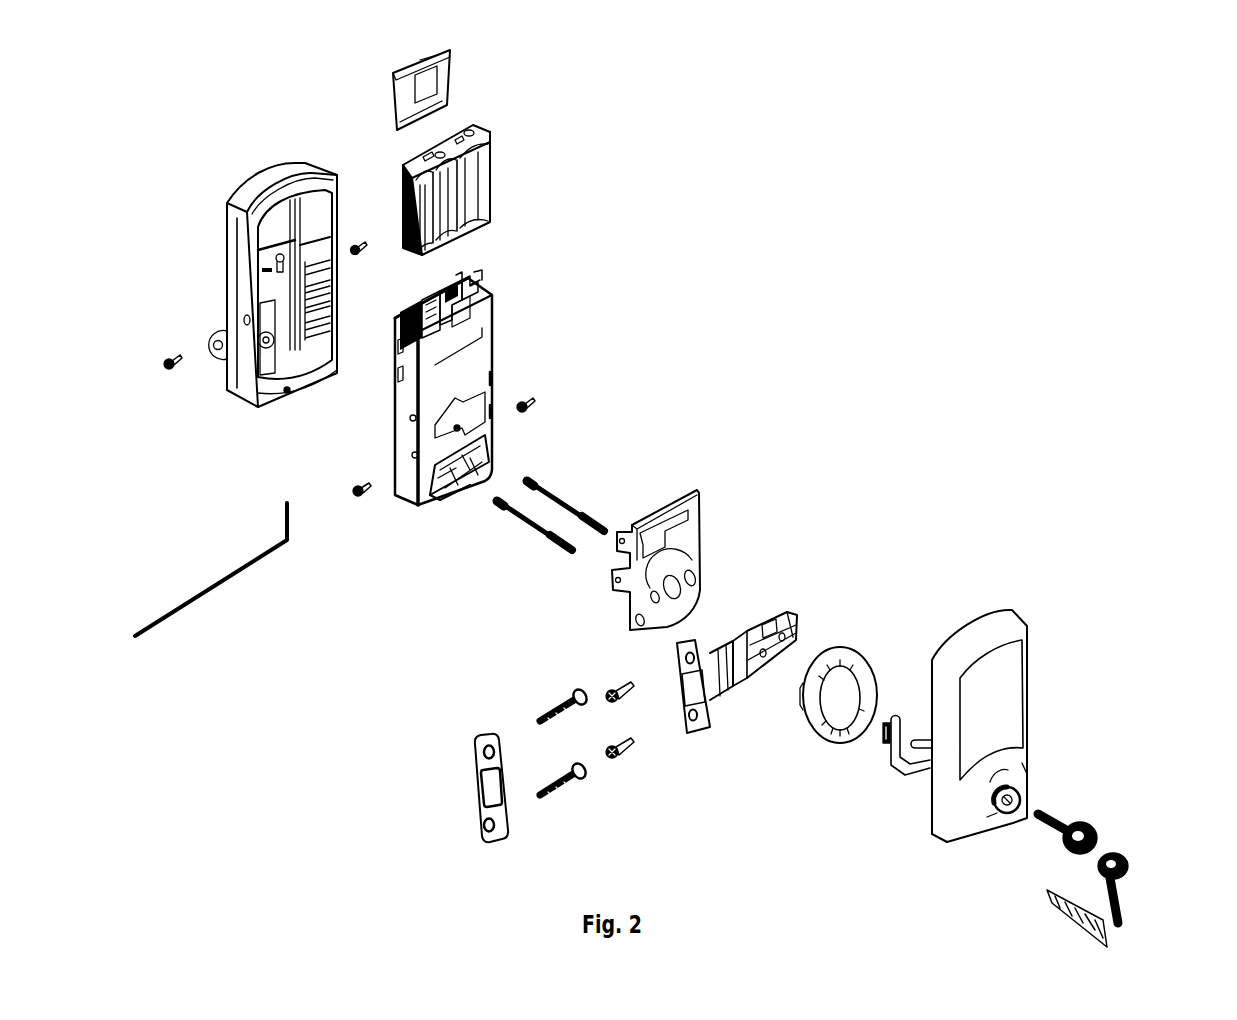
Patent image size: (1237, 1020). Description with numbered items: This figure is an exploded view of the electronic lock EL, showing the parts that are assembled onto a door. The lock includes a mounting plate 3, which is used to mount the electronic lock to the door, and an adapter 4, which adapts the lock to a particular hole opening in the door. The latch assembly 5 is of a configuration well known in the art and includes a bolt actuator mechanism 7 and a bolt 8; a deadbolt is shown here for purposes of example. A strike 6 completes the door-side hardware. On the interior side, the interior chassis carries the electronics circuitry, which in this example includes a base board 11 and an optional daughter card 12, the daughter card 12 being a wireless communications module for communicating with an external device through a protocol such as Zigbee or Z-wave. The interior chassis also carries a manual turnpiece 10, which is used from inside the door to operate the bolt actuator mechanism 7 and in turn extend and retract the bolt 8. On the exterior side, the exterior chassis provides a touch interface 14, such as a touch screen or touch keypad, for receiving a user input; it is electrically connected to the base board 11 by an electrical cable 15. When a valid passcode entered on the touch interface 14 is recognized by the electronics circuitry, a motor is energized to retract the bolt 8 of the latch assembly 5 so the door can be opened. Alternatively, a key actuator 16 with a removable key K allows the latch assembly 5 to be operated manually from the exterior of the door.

The electronic lock EL is at (758, 296).
The daughter card 12 is at (390, 106).
The manual turnpiece 10 is at (213, 357).
The base board 11 is at (492, 340).
The mounting plate 3 is at (700, 510).
The latch assembly 5 is at (803, 608).
The bolt 8 is at (680, 703).
The bolt actuator mechanism 7 is at (738, 684).
The adapter 4 is at (877, 665).
The touch interface 14 is at (1033, 681).
The key actuator 16 is at (1038, 758).
The electrical cable 15 is at (889, 770).
The key K is at (1097, 827).
The strike 6 is at (480, 813).